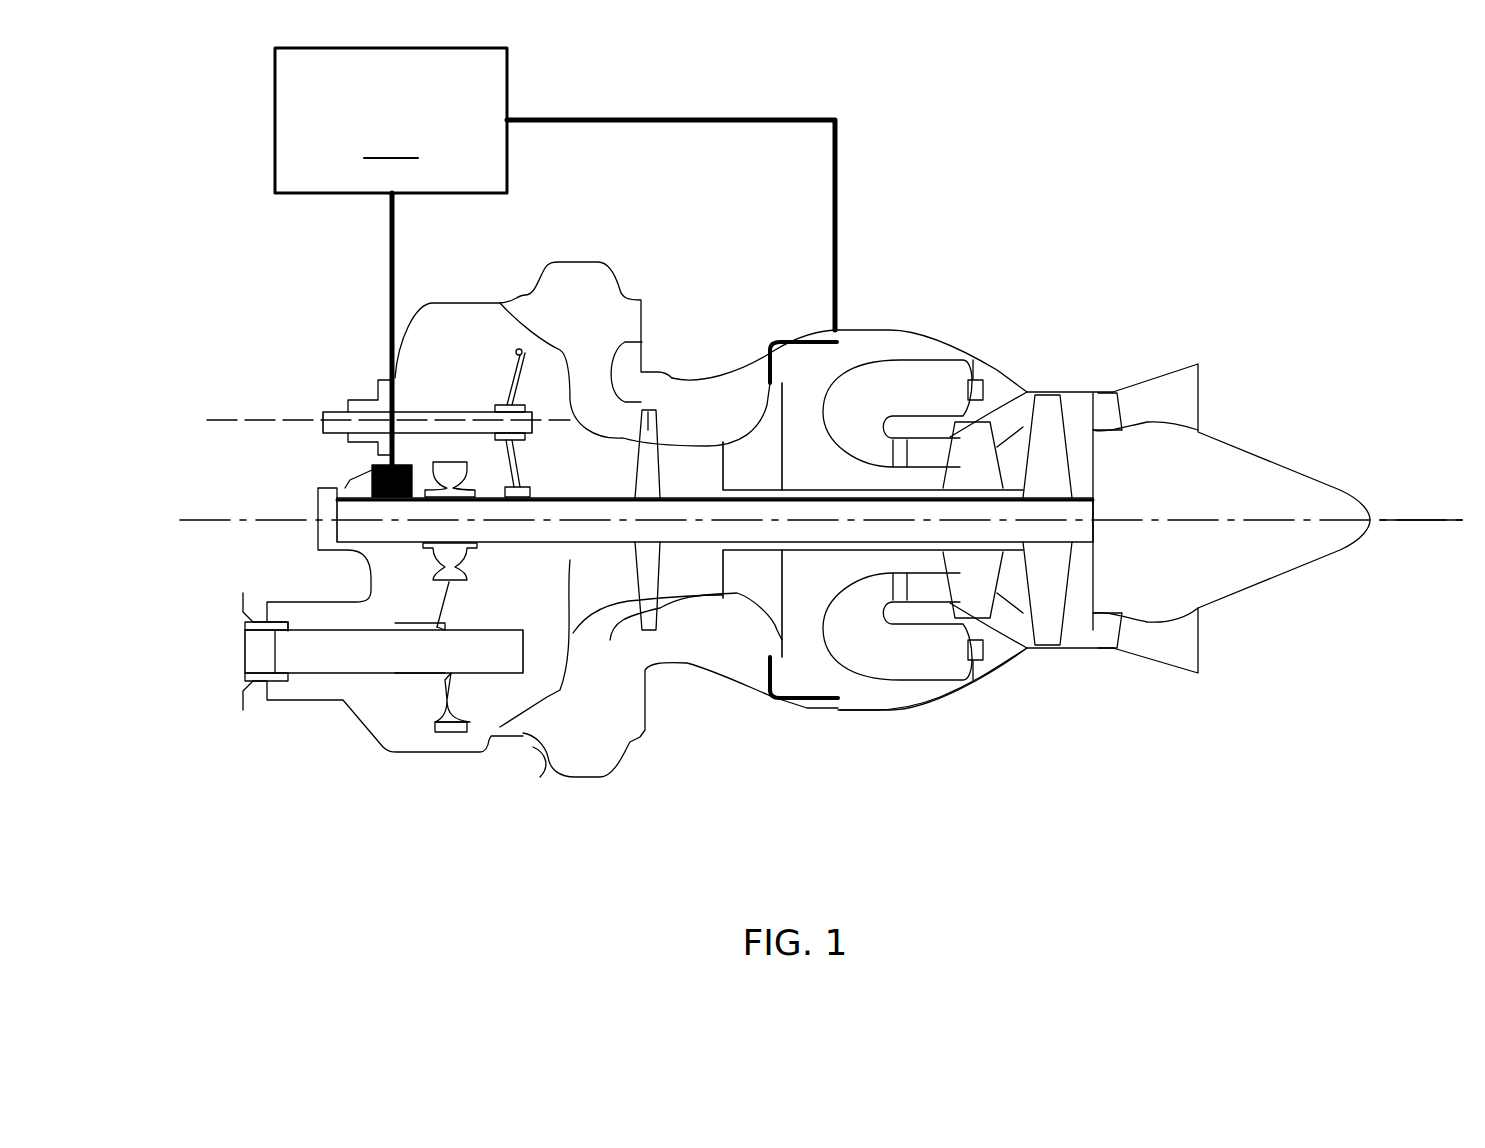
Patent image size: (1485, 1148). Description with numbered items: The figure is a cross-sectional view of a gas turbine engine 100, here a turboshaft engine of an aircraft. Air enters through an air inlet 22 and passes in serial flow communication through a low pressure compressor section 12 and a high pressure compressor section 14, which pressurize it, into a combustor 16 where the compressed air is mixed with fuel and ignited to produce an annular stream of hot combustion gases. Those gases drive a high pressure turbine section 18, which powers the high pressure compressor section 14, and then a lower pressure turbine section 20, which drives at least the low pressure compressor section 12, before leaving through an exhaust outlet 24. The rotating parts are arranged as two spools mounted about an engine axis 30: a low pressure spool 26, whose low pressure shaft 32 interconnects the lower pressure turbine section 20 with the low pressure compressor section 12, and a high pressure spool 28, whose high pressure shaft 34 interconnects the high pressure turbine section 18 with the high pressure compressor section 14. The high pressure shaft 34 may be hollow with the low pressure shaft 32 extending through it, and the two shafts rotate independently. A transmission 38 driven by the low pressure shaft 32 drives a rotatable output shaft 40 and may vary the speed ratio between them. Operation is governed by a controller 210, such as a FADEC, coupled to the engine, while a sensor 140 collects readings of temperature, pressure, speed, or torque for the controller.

The gas turbine engine 100 is at (1163, 283).
The controller 210 is at (555, 256).
The sensor 140 is at (364, 475).
The low pressure compressor section 12 is at (647, 450).
The high pressure compressor section 14 is at (757, 453).
The combustor 16 is at (916, 395).
The high pressure turbine section 18 is at (968, 572).
The lower pressure turbine section 20 is at (1045, 420).
The air inlet 22 is at (547, 762).
The exhaust outlet 24 is at (1180, 650).
The low pressure spool 26 is at (680, 580).
The high pressure spool 28 is at (805, 550).
The engine axis 30 is at (1435, 517).
The low pressure shaft 32 is at (577, 543).
The high pressure shaft 34 is at (870, 524).
The transmission 38 is at (412, 568).
The output shaft 40 is at (310, 657).